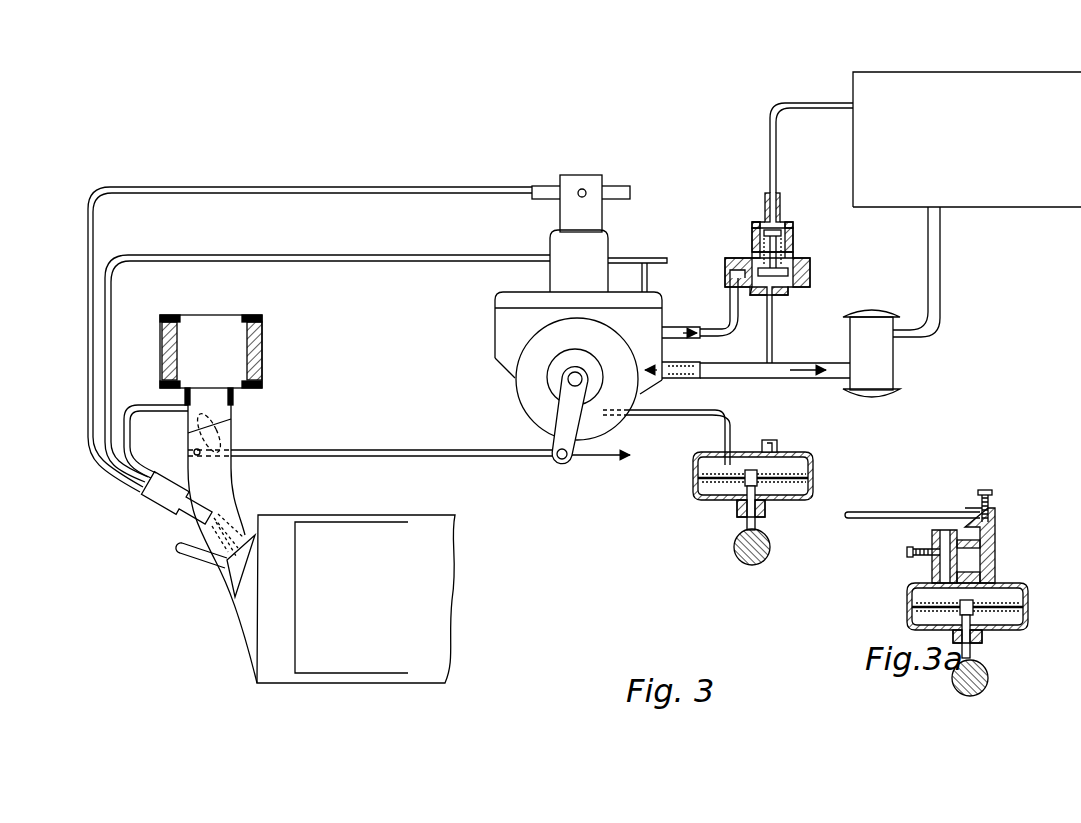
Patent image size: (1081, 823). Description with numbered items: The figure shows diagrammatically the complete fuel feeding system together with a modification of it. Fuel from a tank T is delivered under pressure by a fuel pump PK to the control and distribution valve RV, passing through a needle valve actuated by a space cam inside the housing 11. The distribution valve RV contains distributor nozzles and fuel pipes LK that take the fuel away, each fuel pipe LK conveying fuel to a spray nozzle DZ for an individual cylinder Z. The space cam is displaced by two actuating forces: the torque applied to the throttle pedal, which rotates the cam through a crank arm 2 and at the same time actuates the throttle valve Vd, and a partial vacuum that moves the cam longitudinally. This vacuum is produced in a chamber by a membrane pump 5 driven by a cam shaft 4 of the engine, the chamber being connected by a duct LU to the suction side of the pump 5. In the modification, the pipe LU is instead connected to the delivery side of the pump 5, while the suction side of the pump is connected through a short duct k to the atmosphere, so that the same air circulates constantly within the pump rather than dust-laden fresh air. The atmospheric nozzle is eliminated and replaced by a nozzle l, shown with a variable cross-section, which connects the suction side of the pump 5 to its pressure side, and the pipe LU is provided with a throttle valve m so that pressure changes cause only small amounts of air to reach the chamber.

In FIG. 3, the fuel pipe Lk is at (327, 192).
In FIG. 3, the control and distribution valve Rv is at (602, 247).
In FIG. 3, the tank T is at (1023, 202).
In FIG. 3, the fuel pump Pk is at (880, 374).
In FIG. 3, the duct (pipe) Lu is at (683, 414).
In FIG. 3A, the duct (pipe) Lu is at (927, 511).
In FIG. 3, the housing 11 is at (528, 390).
In FIG. 3, the crank arm 2 is at (573, 410).
In FIG. 3, the membrane pump 5 is at (813, 465).
In FIG. 3A, the membrane pump 5 is at (1027, 620).
In FIG. 3, the cam shaft 4 is at (768, 543).
In FIG. 3A, the cam shaft 4 is at (987, 675).
In FIG. 3, the throttle valve Vd is at (223, 423).
In FIG. 3, the spray nozzle Dz is at (152, 497).
In FIG. 3, the cylinder Z is at (277, 607).
In FIG. 3A, the throttle valve m is at (990, 490).
In FIG. 3A, the short duct k is at (933, 533).
In FIG. 3A, the nozzle l is at (905, 557).